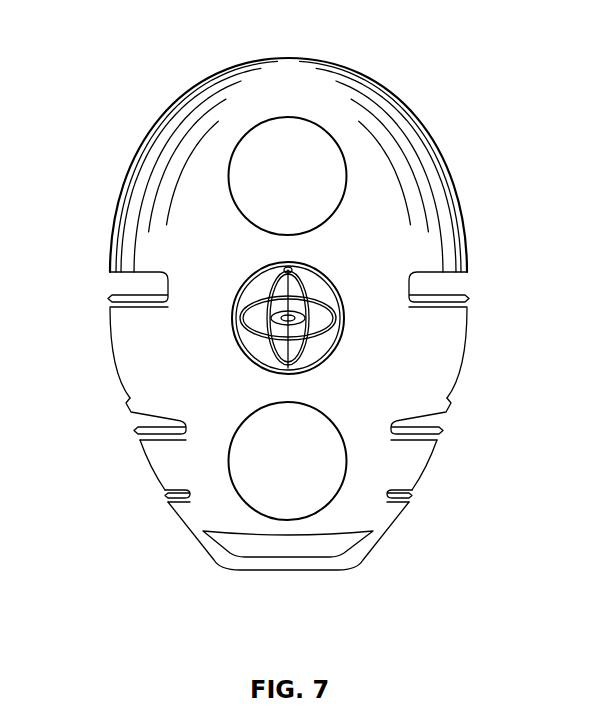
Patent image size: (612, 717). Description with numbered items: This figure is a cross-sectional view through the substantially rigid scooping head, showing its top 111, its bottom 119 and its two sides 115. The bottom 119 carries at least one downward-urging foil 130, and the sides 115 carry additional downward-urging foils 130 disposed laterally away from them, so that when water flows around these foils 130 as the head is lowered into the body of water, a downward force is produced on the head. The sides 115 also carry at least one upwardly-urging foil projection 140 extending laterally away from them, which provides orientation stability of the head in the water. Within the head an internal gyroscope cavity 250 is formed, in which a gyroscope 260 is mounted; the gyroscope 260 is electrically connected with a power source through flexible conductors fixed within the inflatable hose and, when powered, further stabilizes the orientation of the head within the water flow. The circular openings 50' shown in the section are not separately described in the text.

The top 111 is at (295, 59).
The sides 115 is at (108, 336).
The upwardly-urging foil projection 140 is at (464, 299).
The downward-urging foil 130 is at (443, 429).
The bottom 119 is at (282, 571).
The circular opening 50' is at (288, 318).
The internal gyroscope cavity 250 is at (330, 283).
The gyroscope 260 is at (292, 267).